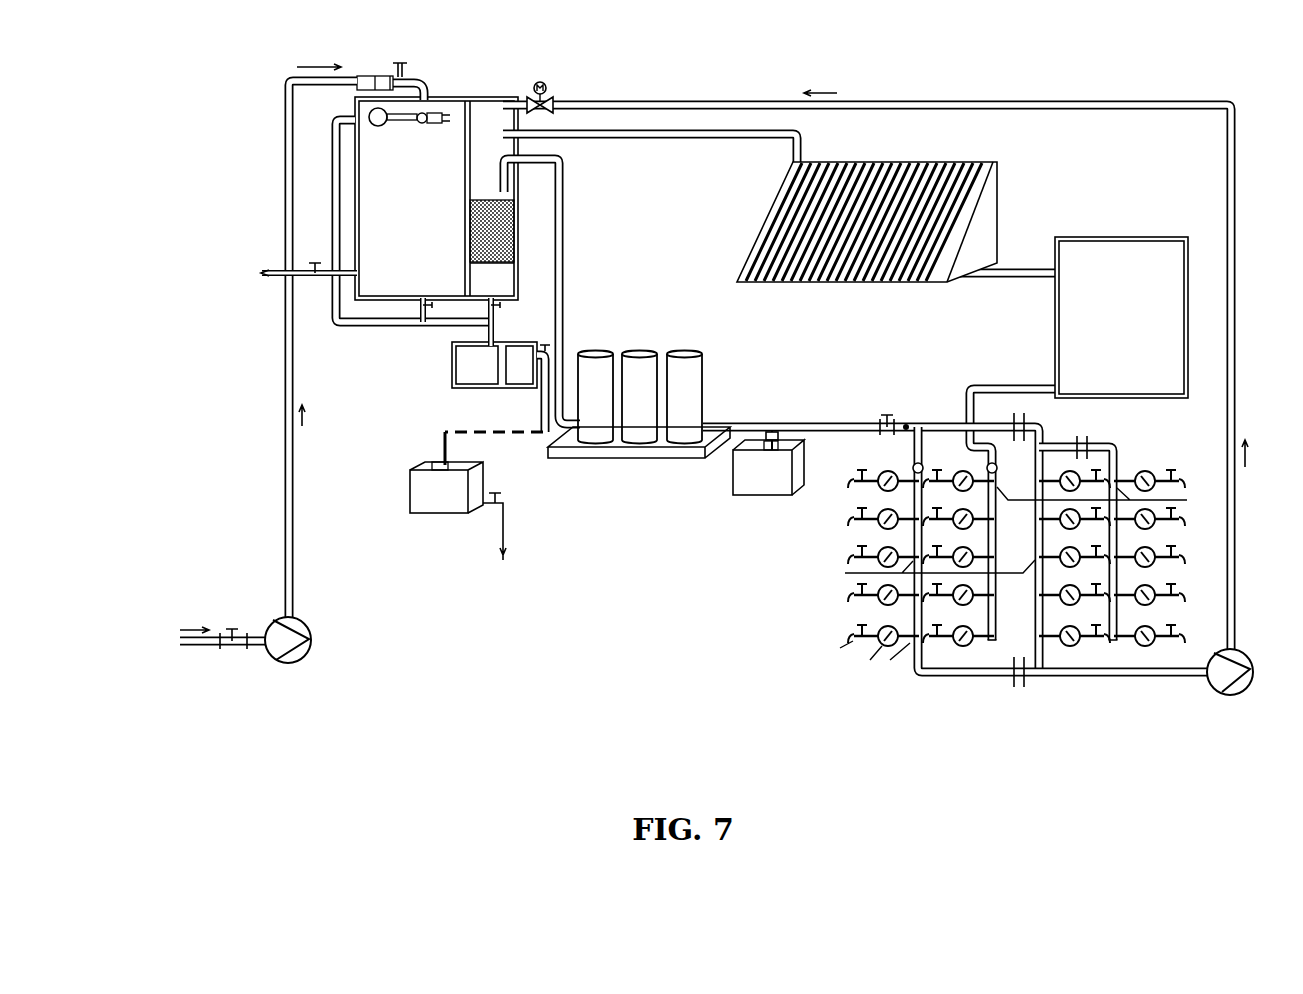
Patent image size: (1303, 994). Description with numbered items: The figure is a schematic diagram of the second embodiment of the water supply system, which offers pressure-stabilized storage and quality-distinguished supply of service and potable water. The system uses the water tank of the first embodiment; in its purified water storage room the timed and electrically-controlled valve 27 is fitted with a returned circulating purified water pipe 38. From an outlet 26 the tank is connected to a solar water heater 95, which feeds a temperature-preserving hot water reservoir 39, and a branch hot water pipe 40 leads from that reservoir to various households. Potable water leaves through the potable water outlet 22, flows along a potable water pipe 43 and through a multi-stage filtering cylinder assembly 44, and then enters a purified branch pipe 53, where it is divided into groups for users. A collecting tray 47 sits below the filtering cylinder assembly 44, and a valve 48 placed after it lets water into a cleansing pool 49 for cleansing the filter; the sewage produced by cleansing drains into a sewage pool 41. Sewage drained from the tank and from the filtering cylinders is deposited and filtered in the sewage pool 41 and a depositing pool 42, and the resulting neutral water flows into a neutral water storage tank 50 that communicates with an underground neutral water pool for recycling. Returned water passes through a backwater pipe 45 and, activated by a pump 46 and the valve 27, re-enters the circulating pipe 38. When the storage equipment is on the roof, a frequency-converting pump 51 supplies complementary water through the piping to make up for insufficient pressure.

The potable water outlet 22 is at (501, 160).
The outlet connecting with a solar water heater 26 is at (590, 139).
The timed and electrically-controlled valve 27 is at (547, 95).
The returned circulating purified water pipe 38 is at (1025, 103).
The temperature-preserving hot water reservoir 39 is at (1092, 238).
The branch hot water pipe 40 is at (1012, 380).
The sewage pool 41 is at (477, 378).
The depositing pool 42 is at (520, 378).
The potable water pipe 43 is at (565, 232).
The multi-stage filtering cylinder assembly 44 is at (643, 310).
The backwater pipe 45 is at (1112, 678).
The pump 46 is at (1246, 655).
The collecting tray 47 is at (620, 452).
The valve 48 is at (774, 420).
The cleansing pool 49 is at (770, 483).
The neutral water storage tank 50 is at (443, 508).
The frequency-converting pump 51 is at (305, 621).
The purified branch pipe 53 is at (838, 421).
The solar water heater 95 is at (885, 162).